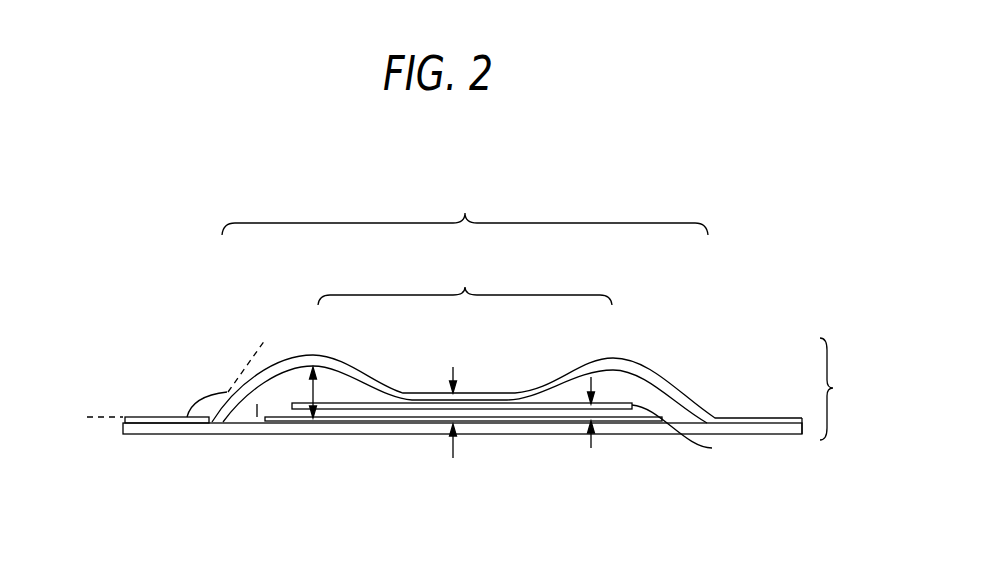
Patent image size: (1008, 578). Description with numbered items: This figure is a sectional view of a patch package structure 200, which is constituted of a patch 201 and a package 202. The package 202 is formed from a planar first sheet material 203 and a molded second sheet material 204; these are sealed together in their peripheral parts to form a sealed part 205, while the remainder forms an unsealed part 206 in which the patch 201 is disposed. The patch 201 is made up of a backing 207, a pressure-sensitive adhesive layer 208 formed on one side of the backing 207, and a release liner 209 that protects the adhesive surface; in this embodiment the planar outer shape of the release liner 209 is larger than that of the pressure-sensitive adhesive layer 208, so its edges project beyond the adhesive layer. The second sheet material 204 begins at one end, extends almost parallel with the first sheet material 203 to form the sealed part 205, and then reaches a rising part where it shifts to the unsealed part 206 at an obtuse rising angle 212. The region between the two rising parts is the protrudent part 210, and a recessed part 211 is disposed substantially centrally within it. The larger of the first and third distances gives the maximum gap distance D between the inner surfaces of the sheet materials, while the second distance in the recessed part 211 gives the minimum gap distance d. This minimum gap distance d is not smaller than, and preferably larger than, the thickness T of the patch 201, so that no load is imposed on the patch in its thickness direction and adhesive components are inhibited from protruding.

The package structure 200 is at (847, 389).
The patch 201 is at (256, 418).
The package 202 is at (783, 427).
The first sheet material 203 is at (123, 430).
The second sheet material 204 is at (310, 356).
The sealed part 205 is at (148, 415).
The unsealed part 206 is at (243, 376).
The backing 207 is at (691, 432).
The pressure-sensitive adhesive layer 208 is at (648, 410).
The release liner 209 is at (622, 421).
The protrudent part 210 is at (465, 212).
The recessed part 211 is at (465, 282).
The rising angle 212 is at (198, 408).
The maximum gap distance D is at (315, 395).
The minimum gap distance d is at (454, 410).
The thickness of the patch T is at (589, 421).